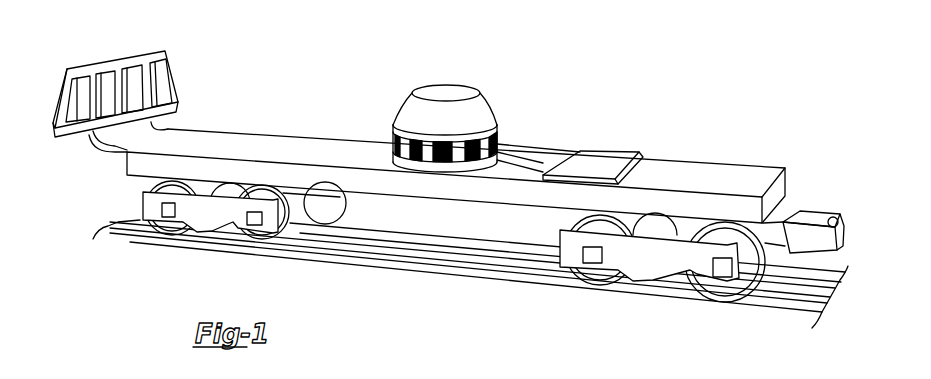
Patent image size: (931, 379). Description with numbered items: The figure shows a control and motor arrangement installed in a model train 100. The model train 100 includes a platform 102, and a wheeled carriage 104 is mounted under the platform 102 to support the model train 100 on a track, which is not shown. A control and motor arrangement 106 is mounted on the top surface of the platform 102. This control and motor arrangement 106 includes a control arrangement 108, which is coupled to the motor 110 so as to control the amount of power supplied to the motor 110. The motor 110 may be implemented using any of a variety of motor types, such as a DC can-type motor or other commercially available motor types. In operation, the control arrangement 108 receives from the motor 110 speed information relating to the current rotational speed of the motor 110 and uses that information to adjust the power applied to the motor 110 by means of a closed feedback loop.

The model train 100 is at (747, 143).
The platform 102 is at (652, 178).
The wheeled carriage 104 is at (186, 220).
The control and motor arrangement 106 is at (442, 101).
The control arrangement 108 is at (593, 160).
The motor 110 is at (481, 118).